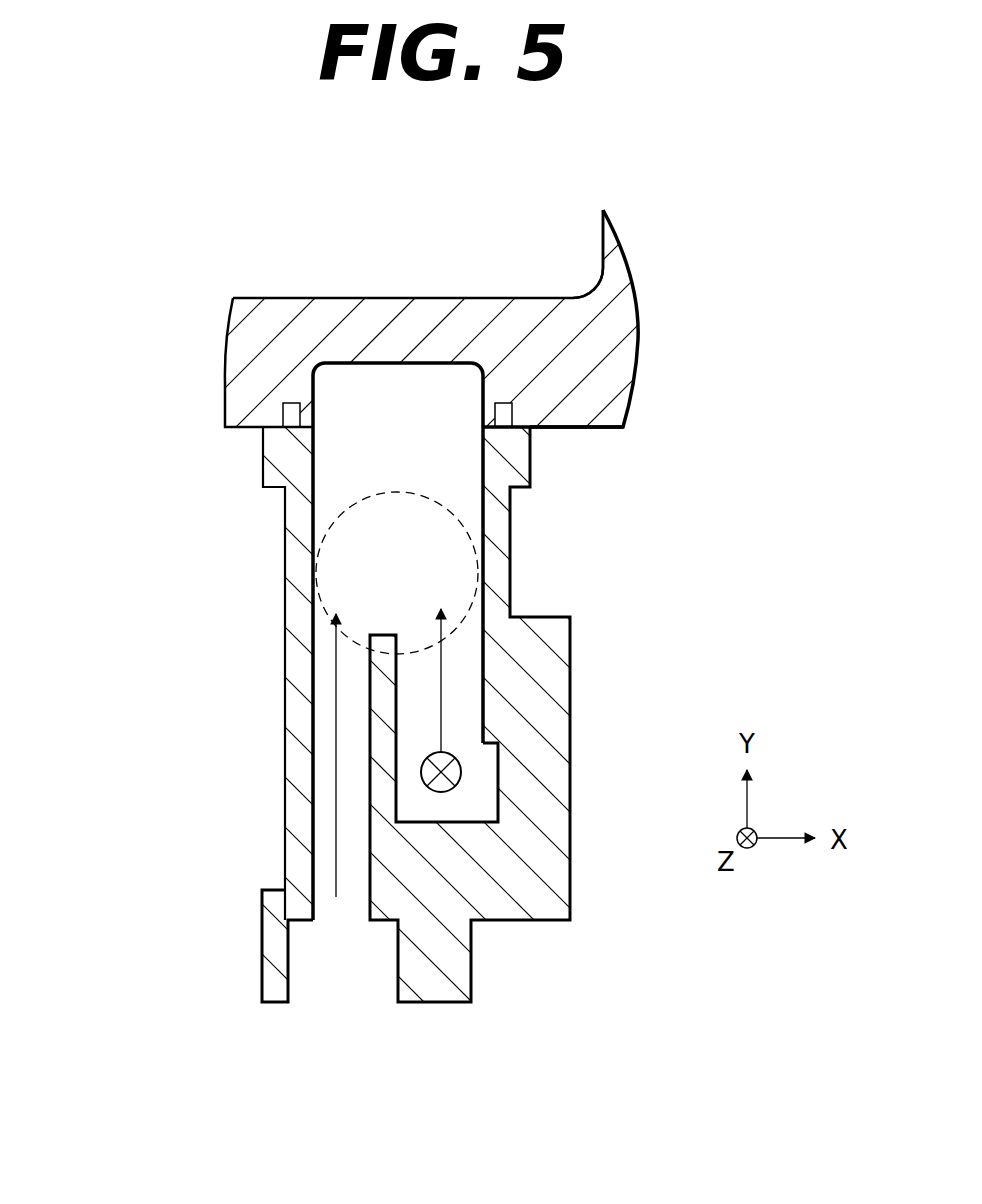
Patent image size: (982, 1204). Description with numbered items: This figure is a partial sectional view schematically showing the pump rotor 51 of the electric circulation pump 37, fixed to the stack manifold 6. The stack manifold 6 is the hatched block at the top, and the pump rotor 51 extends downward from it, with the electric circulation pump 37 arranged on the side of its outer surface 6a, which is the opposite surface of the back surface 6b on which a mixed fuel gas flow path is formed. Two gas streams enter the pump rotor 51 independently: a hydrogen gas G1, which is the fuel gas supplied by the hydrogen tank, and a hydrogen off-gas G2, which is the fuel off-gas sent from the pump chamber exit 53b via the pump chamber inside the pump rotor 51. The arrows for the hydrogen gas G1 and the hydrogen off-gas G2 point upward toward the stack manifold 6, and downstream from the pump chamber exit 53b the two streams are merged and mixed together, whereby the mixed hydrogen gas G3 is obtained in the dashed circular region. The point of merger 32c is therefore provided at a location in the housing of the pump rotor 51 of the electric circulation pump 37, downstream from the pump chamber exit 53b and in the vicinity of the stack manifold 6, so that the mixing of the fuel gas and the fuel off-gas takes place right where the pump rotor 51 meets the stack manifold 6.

The stack manifold 6 is at (392, 310).
The surface of stack manifold 6a is at (577, 429).
The back surface of stack manifold 6b is at (513, 298).
The point of merger 32c is at (358, 498).
The pump rotor 51 is at (434, 715).
The electric circulation pump 37 is at (283, 812).
The pump chamber exit 53b is at (482, 800).
The hydrogen gas G1 is at (337, 864).
The hydrogen off-gas G2 is at (441, 692).
The mixed hydrogen gas G3 is at (397, 573).